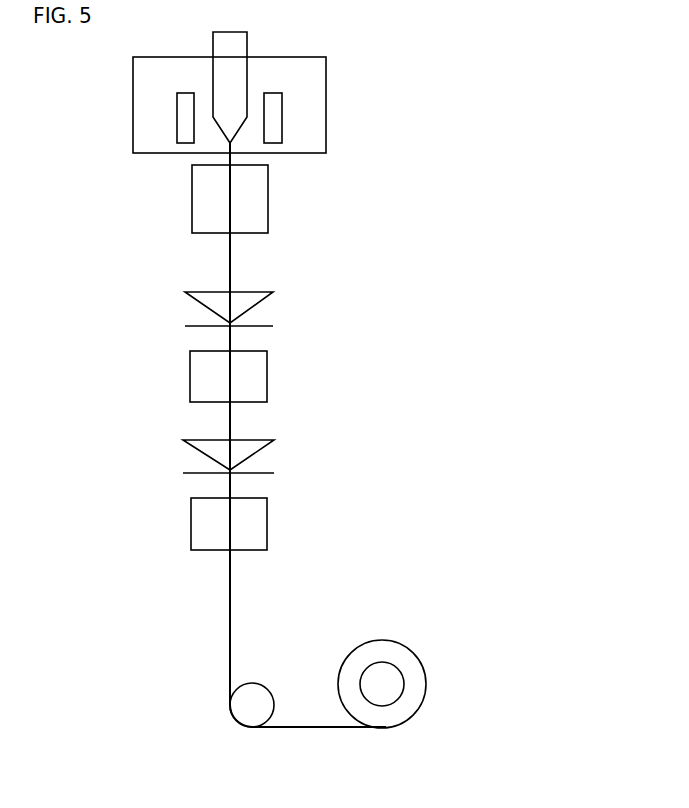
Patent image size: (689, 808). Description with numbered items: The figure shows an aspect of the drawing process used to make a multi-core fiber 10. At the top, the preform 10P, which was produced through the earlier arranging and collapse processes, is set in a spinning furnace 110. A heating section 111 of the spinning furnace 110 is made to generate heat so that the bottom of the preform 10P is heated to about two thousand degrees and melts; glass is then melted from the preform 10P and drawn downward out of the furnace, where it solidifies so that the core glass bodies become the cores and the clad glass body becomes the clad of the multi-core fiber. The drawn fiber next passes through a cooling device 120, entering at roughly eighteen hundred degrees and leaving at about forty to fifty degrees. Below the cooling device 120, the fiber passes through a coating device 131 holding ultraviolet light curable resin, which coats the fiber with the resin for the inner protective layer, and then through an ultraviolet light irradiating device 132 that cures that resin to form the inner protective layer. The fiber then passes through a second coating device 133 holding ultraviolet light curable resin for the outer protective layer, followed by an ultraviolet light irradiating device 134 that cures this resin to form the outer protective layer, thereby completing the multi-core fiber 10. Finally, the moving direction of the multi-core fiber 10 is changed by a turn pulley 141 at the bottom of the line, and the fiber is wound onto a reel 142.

The multi-core fiber 10 is at (231, 613).
The preform 10P is at (232, 92).
The spinning furnace 110 is at (326, 72).
The heating section 111 is at (272, 120).
The cooling device 120 is at (247, 215).
The coating device 131 is at (243, 300).
The ultraviolet light irradiating device 132 is at (243, 365).
The coating device 133 is at (243, 447).
The ultraviolet light irradiating device 134 is at (243, 512).
The turn pulley 141 is at (247, 695).
The reel 142 is at (380, 683).